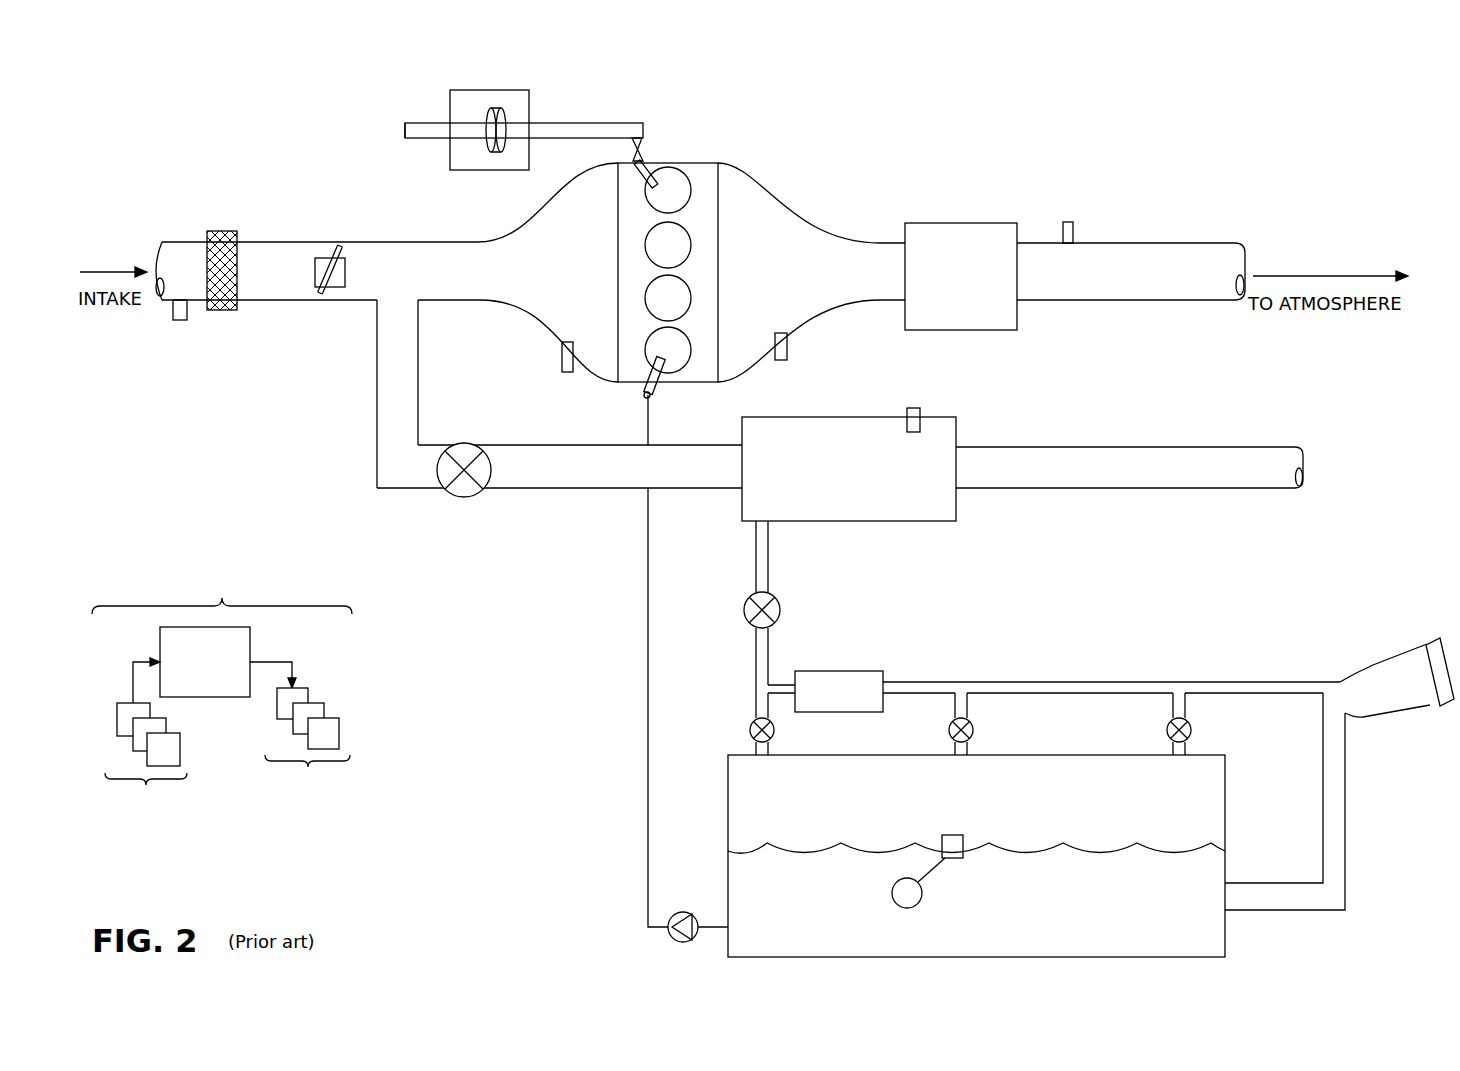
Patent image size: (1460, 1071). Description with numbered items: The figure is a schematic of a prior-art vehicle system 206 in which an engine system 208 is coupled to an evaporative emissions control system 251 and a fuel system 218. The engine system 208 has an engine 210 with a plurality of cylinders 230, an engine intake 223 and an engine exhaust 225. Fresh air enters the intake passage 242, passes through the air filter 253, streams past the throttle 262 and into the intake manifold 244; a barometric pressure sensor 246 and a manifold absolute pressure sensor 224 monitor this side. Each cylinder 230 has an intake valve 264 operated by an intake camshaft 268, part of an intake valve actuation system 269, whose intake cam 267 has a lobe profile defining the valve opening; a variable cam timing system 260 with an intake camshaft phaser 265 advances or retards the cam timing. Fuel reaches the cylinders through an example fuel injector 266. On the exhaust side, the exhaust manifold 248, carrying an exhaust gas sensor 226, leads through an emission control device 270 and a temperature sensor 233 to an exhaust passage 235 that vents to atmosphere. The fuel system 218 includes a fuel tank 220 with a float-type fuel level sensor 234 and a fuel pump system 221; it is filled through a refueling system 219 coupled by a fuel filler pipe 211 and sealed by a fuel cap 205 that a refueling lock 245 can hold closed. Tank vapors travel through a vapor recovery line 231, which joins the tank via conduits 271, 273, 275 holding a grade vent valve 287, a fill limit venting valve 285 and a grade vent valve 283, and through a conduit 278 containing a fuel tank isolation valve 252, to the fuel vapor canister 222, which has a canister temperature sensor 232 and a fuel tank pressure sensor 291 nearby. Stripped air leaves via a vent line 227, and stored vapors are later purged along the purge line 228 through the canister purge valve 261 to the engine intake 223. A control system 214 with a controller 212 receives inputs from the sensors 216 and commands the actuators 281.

The vehicle system 206 is at (172, 165).
The engine system 208 is at (1033, 159).
The engine 210 is at (718, 300).
The cylinder 230 is at (690, 188).
The engine intake 223 is at (462, 216).
The intake passage 242 is at (290, 300).
The air filter 253 is at (218, 231).
The barometric pressure sensor 246 is at (178, 322).
The throttle 262 is at (345, 275).
The intake manifold 244 is at (543, 282).
The manifold absolute pressure sensor 224 is at (562, 353).
The intake valve 264 is at (637, 172).
The fuel injector 266 is at (657, 385).
The variable cam timing system 260 is at (530, 102).
The intake camshaft 268 is at (593, 124).
The intake valve actuation system 269 is at (402, 112).
The intake camshaft phaser 265 is at (492, 155).
The intake cam 267 is at (643, 148).
The engine exhaust 225 is at (902, 168).
The exhaust manifold 248 is at (773, 282).
The exhaust gas sensor 226 is at (787, 340).
The emission control device 270 is at (948, 223).
The temperature sensor 233 is at (1063, 230).
The exhaust passage 235 is at (1190, 242).
The evaporative emissions control system 251 is at (1062, 409).
The fuel vapor canister 222 is at (910, 521).
The canister temperature sensor 232 is at (910, 408).
The purge line 228 is at (555, 481).
The canister purge valve 261 is at (465, 445).
The vent line 227 is at (1090, 490).
The conduit 278 is at (770, 572).
The fuel tank isolation valve 252 is at (745, 605).
The fuel tank pressure sensor 291 is at (845, 671).
The grade vent valve 287 is at (750, 730).
The conduit 271 is at (775, 710).
The vapor recovery line 231 is at (1243, 682).
The conduit 273 is at (955, 702).
The fill limit venting valve 285 is at (972, 732).
The conduit 275 is at (1172, 705).
The grade vent valve 283 is at (1193, 737).
The fuel system 218 is at (1368, 912).
The fuel tank 220 is at (1225, 812).
The fuel level sensor 234 is at (952, 836).
The fuel pump system 221 is at (678, 913).
The refueling system 219 is at (1397, 634).
The fuel filler pipe 211 is at (1345, 798).
The refueling lock 245 is at (1430, 707).
The fuel cap 205 is at (1432, 640).
The control system 214 is at (222, 690).
The controller 212 is at (189, 674).
The sensors 216 is at (146, 766).
The actuators 281 is at (308, 751).